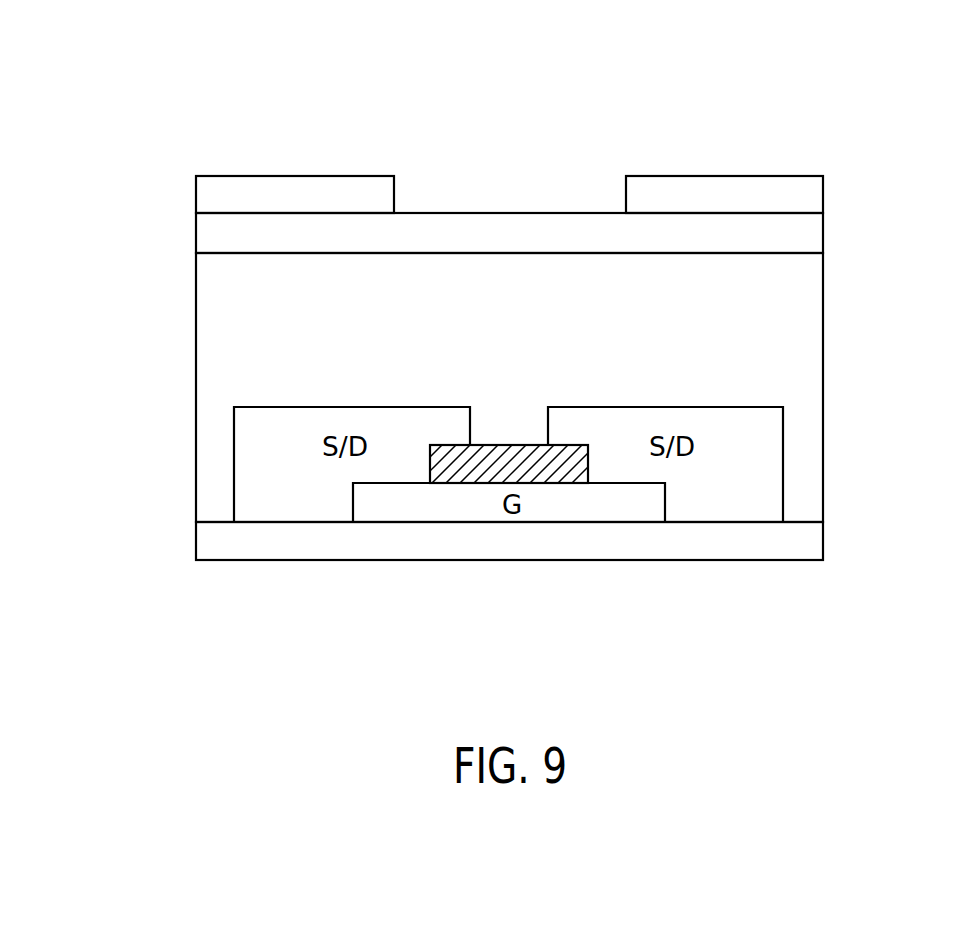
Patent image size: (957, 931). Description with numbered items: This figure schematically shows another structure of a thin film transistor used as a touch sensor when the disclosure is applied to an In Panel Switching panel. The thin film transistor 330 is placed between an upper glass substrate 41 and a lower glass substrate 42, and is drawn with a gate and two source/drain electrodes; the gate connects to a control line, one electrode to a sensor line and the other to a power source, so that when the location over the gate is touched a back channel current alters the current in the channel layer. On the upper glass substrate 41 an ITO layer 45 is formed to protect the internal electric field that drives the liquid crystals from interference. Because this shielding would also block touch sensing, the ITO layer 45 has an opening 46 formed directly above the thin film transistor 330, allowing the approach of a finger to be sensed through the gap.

The opening 46 is at (520, 174).
The ITO layer 45 is at (196, 202).
The upper glass substrate 41 is at (196, 238).
The thin film transistor 330 is at (275, 364).
The lower glass substrate 42 is at (196, 542).